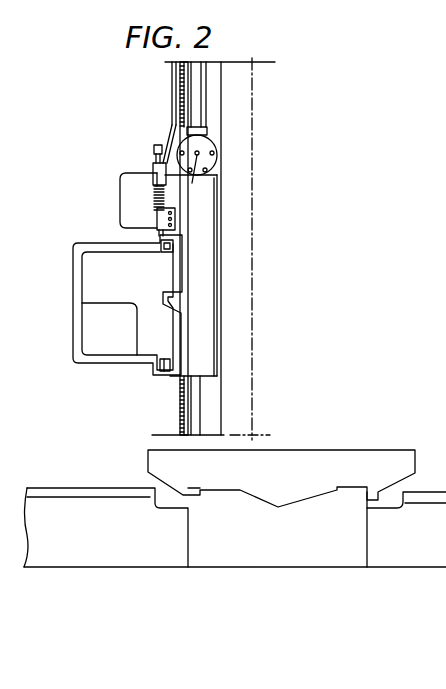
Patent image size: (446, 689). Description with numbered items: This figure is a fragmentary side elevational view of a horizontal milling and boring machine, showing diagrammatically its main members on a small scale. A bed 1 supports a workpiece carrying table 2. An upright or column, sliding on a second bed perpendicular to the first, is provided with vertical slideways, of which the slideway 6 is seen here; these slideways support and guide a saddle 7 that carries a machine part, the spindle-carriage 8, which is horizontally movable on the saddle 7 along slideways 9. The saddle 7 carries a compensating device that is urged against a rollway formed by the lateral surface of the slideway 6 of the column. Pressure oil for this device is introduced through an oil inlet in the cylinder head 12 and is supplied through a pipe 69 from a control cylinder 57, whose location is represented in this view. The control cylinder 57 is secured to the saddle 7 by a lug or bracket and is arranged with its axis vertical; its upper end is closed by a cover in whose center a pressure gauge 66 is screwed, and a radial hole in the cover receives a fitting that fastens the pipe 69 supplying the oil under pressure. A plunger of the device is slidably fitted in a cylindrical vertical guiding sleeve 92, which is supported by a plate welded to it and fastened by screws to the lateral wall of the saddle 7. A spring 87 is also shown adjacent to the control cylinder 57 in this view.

The bed 1 is at (299, 555).
The workpiece carrying table 2 is at (316, 462).
The vertical slideway 6 is at (220, 62).
The saddle 7 is at (122, 193).
The spindle-carriage 8 is at (102, 273).
The slideways 9 is at (168, 250).
The cylinder head 12 is at (212, 142).
The control cylinder 57 is at (153, 170).
The pressure gauge 66 is at (155, 150).
The pipe 69 is at (194, 179).
The spring 87 is at (158, 204).
The guiding sleeve 92 is at (160, 225).